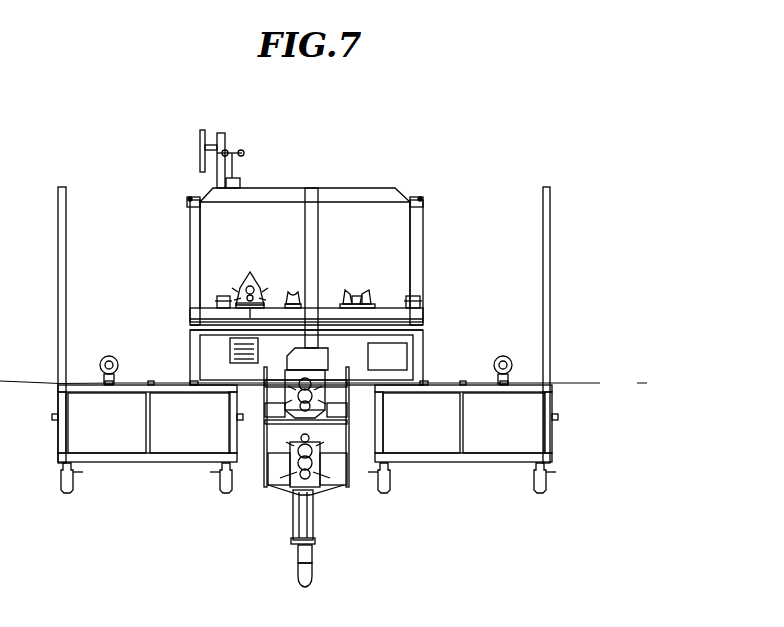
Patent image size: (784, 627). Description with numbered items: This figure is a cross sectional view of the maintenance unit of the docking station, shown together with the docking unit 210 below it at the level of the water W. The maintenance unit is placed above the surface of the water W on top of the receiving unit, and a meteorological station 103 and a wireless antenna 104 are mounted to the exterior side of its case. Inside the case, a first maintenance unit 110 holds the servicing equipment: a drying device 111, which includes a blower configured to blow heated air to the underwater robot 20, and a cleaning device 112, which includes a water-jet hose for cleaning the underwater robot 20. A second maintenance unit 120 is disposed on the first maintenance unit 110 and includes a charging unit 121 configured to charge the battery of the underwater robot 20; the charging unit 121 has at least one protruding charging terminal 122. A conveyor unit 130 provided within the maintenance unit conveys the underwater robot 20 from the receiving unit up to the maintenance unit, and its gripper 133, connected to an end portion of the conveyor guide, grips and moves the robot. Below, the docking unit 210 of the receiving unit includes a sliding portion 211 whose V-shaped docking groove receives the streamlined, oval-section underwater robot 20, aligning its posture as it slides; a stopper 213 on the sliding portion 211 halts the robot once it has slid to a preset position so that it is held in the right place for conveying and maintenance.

The underwater robot 20 is at (313, 497).
The meteorological station 103 is at (237, 152).
The wireless antenna 104 is at (199, 142).
The first maintenance unit 110 is at (397, 341).
The drying device 111 is at (228, 348).
The cleaning device 112 is at (397, 363).
The second maintenance unit 120 is at (398, 248).
The charging unit 121 is at (265, 276).
The charging terminal 122 is at (373, 296).
The conveyor unit 130 is at (330, 244).
The gripper 133 is at (327, 358).
The docking unit 210 is at (318, 450).
The sliding portion 211 is at (270, 488).
The stopper 213 is at (386, 468).
The water W is at (591, 382).